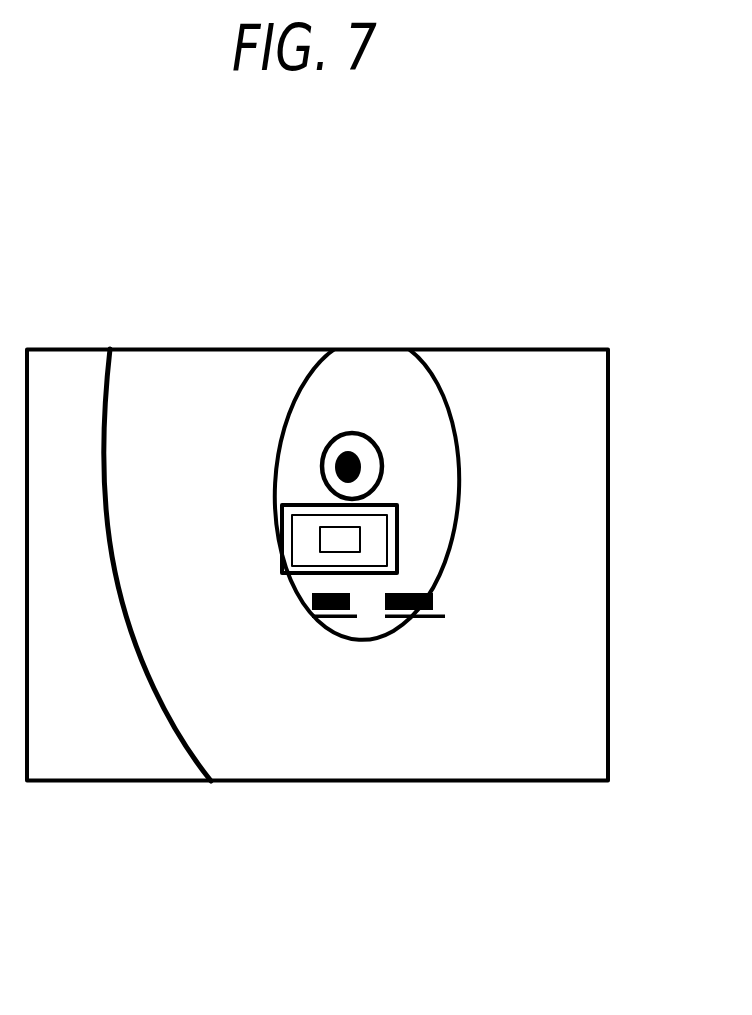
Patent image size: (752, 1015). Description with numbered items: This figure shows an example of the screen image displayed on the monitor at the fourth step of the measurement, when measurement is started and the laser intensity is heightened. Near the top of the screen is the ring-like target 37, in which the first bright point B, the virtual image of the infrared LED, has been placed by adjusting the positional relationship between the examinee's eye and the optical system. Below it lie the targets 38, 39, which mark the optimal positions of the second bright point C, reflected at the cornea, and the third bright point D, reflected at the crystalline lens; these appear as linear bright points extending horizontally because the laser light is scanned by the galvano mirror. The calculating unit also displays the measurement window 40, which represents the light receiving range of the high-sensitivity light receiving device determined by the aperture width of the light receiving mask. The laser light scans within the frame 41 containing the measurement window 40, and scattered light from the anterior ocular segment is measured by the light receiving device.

The target 37 is at (412, 369).
The target 38 is at (218, 738).
The target 39 is at (528, 702).
The measurement window 40 is at (320, 540).
The frame 41 is at (360, 431).
The first bright point B is at (345, 451).
The second bright point C is at (312, 602).
The third bright point D is at (407, 593).